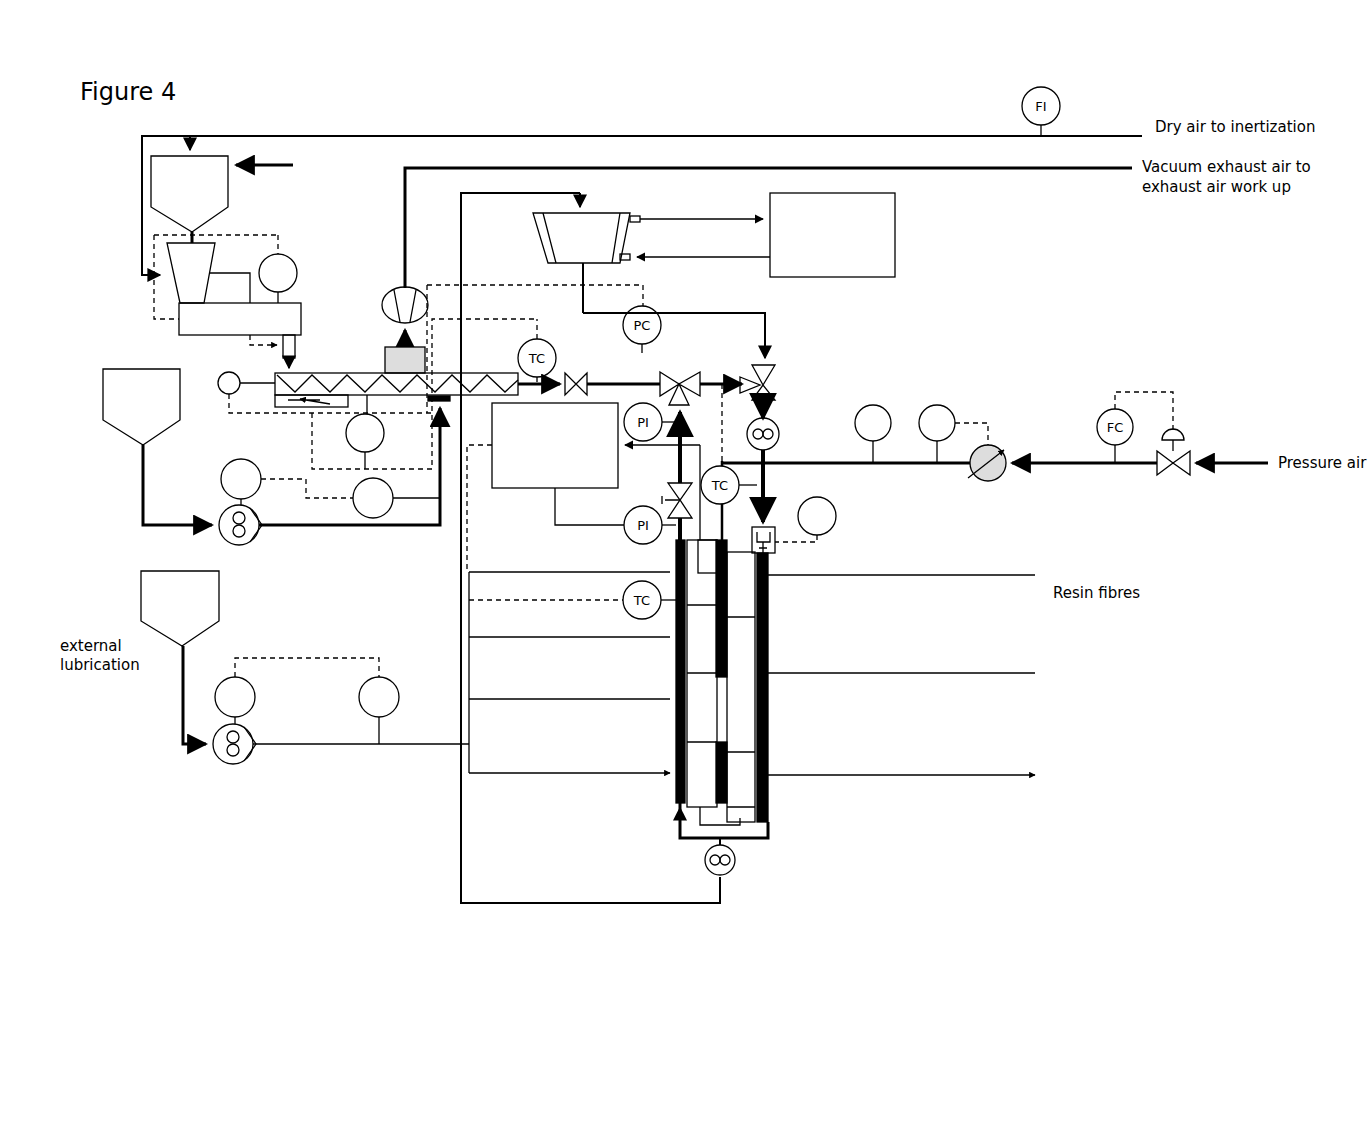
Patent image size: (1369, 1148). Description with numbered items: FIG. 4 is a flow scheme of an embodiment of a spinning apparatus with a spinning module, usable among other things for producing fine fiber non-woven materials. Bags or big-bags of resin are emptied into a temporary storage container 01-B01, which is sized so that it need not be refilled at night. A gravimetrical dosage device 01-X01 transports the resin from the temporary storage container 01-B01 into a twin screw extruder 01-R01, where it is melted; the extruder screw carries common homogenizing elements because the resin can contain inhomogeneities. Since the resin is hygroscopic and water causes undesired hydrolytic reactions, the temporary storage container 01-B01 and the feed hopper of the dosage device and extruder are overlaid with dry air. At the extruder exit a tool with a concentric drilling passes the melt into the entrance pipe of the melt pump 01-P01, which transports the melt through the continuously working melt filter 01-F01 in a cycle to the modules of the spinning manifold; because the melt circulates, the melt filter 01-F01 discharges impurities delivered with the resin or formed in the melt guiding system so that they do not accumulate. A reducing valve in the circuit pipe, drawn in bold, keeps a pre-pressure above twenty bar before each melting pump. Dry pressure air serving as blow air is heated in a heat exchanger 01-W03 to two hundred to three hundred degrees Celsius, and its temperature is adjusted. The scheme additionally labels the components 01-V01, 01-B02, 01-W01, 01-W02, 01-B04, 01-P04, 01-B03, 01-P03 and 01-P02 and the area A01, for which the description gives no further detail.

The temporary storage container 01-B01 is at (245, 199).
The gravimetrical dosage device 01-X01 is at (227, 301).
The vacuum pump 01-V01 is at (385, 317).
The twin screw extruder 01-R01 is at (430, 377).
The additive tank 01-B04 is at (141, 407).
The additive dosing pump 01-P04 is at (291, 485).
The external lubrication tank 01-B03 is at (180, 608).
The lubrication dosing pump 01-P03 is at (326, 710).
The melt buffer vessel 01-B02 is at (586, 253).
The temper device 01-W01 is at (766, 235).
The temper device 01-W02 is at (583, 487).
The heat exchanger 01-W03 is at (939, 459).
The melt pump 01-P01 is at (806, 457).
The melt filter 01-F01 is at (794, 532).
The return pump 01-P02 is at (759, 869).
The spinning pack A01 is at (722, 689).